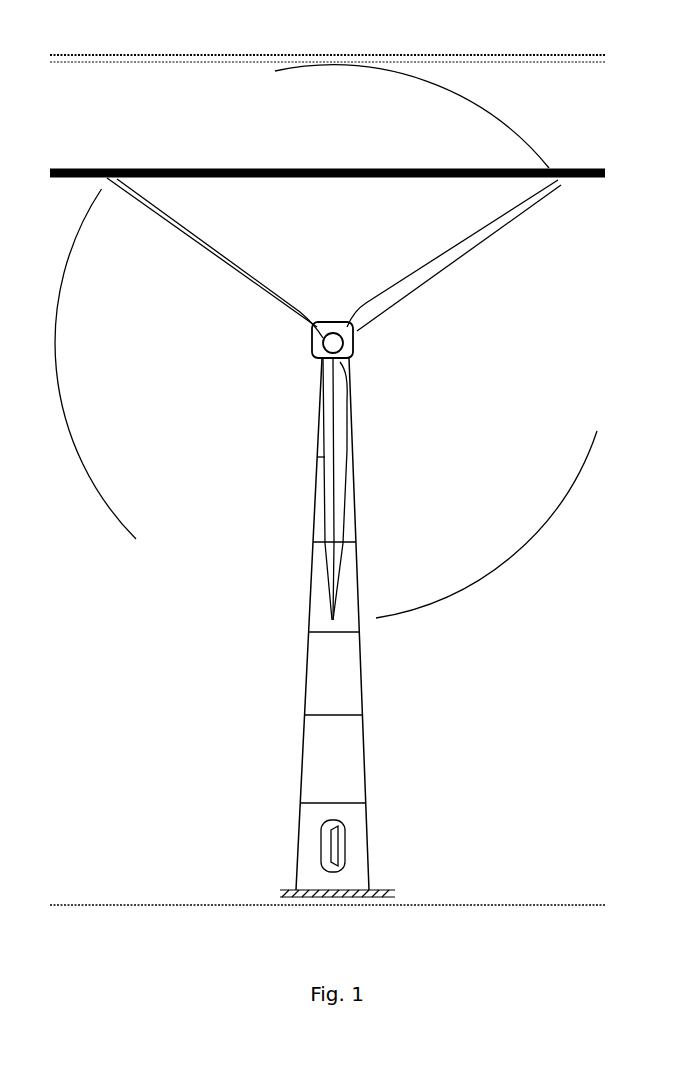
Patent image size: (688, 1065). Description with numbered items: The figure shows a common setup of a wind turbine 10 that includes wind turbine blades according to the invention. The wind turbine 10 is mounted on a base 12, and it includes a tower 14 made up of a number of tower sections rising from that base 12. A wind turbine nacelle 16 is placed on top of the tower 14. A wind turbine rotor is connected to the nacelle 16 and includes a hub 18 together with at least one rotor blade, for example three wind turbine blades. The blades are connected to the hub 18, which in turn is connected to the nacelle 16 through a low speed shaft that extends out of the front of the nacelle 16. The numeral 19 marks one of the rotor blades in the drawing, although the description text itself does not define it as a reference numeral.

The wind turbine 10 is at (606, 37).
The base 12 is at (285, 890).
The tower 14 is at (350, 690).
The wind turbine nacelle 16 is at (349, 348).
The hub 18 is at (332, 343).
The rotor blade 19 is at (463, 248).